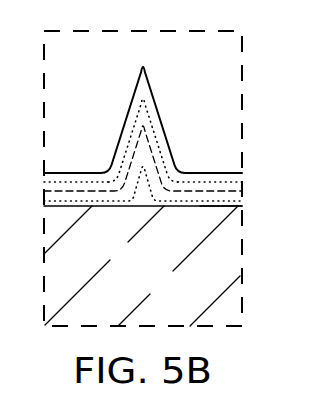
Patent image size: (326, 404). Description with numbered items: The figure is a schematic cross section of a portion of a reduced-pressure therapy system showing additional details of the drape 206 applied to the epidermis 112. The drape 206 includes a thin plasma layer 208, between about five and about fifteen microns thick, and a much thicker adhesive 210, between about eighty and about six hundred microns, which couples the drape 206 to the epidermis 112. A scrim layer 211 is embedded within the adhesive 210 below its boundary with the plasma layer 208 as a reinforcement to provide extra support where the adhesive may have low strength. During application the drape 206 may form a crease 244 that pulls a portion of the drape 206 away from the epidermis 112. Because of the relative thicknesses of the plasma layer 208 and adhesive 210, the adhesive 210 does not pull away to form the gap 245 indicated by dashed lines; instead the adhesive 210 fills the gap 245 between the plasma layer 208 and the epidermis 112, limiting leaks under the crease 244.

The epidermis 112 is at (161, 282).
The drape 206 is at (167, 88).
The plasma layer 208 is at (90, 182).
The adhesive 210 is at (213, 193).
The scrim layer 211 is at (213, 190).
The crease 244 is at (128, 102).
The gap 245 is at (148, 193).